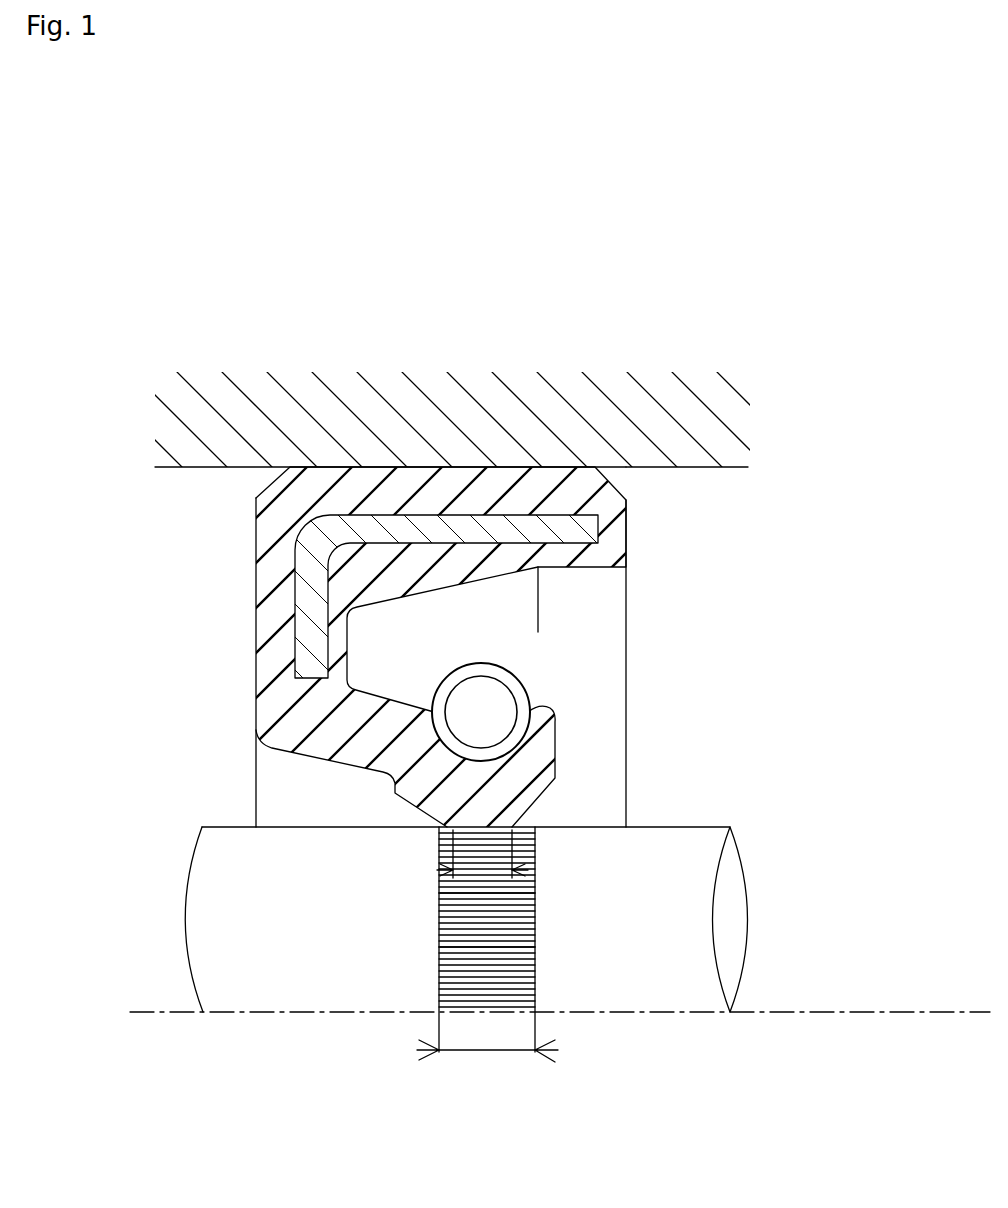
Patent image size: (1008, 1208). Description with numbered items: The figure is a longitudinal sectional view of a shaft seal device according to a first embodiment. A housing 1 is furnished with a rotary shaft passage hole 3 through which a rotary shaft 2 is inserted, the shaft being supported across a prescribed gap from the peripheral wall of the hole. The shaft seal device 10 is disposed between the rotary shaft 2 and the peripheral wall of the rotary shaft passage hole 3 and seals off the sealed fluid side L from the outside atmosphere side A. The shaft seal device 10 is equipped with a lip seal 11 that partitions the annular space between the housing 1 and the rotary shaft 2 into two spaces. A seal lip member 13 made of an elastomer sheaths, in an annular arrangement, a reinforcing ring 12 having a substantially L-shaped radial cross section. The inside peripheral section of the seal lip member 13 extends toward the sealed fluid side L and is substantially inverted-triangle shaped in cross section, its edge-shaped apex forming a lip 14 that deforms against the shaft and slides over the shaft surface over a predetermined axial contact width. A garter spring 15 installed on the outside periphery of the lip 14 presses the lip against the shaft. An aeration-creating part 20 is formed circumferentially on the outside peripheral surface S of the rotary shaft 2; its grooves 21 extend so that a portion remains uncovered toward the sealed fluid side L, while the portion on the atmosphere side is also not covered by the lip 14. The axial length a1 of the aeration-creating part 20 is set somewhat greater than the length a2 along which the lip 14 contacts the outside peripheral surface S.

The housing 1 is at (407, 385).
The rotary shaft 2 is at (288, 975).
The rotary shaft passage hole 3 is at (698, 470).
The shaft seal device 10 is at (195, 782).
The lip seal 11 is at (254, 548).
The reinforcing ring 12 is at (560, 532).
The seal lip member 13 is at (277, 662).
The lip 14 is at (483, 805).
The garter spring 15 is at (517, 705).
The aeration-creating part 20 is at (537, 912).
The thread grooves 21 is at (439, 890).
The length of the aeration-creating part a1 is at (468, 1038).
The contact length of the lip a2 is at (437, 870).
The outside atmosphere side A is at (63, 741).
The sealed fluid side L is at (912, 732).
The outside peripheral surface S is at (687, 867).